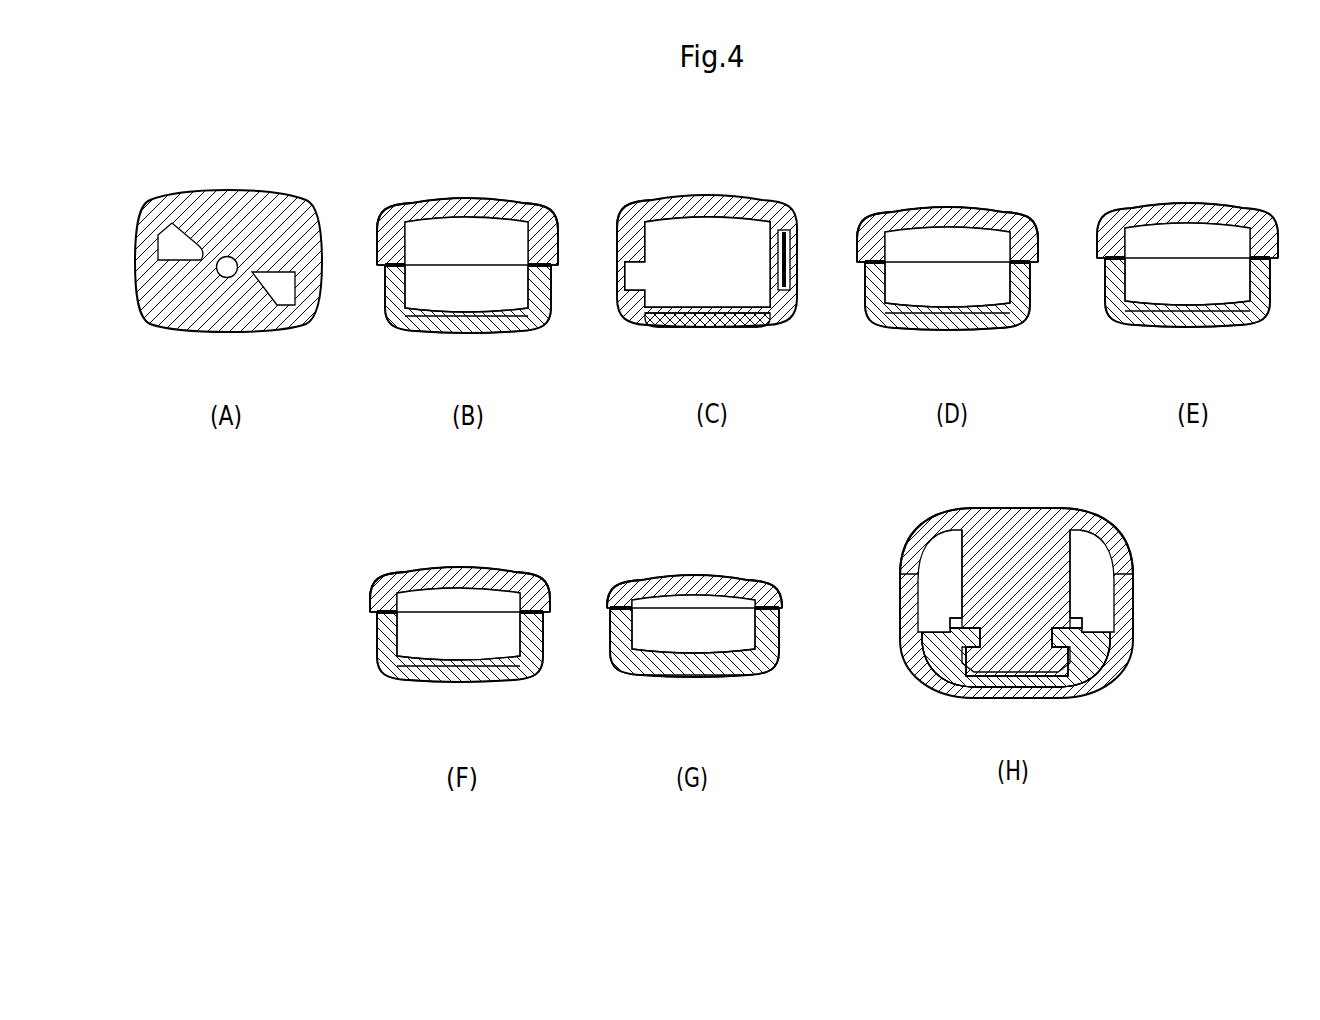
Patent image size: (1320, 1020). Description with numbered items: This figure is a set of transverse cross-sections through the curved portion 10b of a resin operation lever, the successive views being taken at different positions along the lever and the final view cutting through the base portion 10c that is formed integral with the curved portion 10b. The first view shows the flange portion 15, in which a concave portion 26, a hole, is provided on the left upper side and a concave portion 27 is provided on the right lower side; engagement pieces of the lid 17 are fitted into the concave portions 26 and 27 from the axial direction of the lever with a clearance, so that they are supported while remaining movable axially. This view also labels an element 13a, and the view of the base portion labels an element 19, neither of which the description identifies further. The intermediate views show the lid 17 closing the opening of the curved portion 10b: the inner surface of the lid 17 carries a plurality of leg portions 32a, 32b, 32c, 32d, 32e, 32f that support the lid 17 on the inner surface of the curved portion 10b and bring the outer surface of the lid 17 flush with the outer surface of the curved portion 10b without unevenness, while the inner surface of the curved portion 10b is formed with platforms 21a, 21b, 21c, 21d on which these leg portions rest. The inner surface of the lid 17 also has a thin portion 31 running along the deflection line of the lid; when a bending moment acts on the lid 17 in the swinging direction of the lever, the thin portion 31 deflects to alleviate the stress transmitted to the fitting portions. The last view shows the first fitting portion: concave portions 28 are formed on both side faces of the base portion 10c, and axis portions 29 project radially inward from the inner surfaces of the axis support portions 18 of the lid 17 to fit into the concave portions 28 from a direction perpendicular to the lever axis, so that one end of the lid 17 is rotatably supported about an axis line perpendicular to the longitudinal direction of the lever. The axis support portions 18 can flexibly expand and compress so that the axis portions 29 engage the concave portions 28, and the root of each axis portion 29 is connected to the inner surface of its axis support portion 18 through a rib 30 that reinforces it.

The curved portion 10b is at (458, 195).
The base portion 10c is at (1012, 506).
The center hole 13a is at (231, 274).
The flange portion 15 is at (230, 205).
The lid 17 is at (428, 336).
The axis support portion 18 is at (1133, 640).
The upper shell portion 19 is at (1099, 517).
The platform 21a is at (622, 598).
The platform 21b is at (393, 600).
The platform 21c is at (875, 245).
The platform 21d is at (398, 250).
The concave portion 26 is at (165, 243).
The concave portion 27 is at (285, 283).
The concave portion 28 is at (975, 622).
The axis portion 29 is at (978, 692).
The rib 30 is at (930, 680).
The thin portion 31 is at (483, 334).
The leg portion 32a is at (620, 635).
The leg portion 32b is at (385, 640).
The leg portion 32c is at (1112, 283).
The leg portion 32d is at (872, 285).
The leg portion 32e is at (786, 272).
The leg portion 32f is at (390, 285).